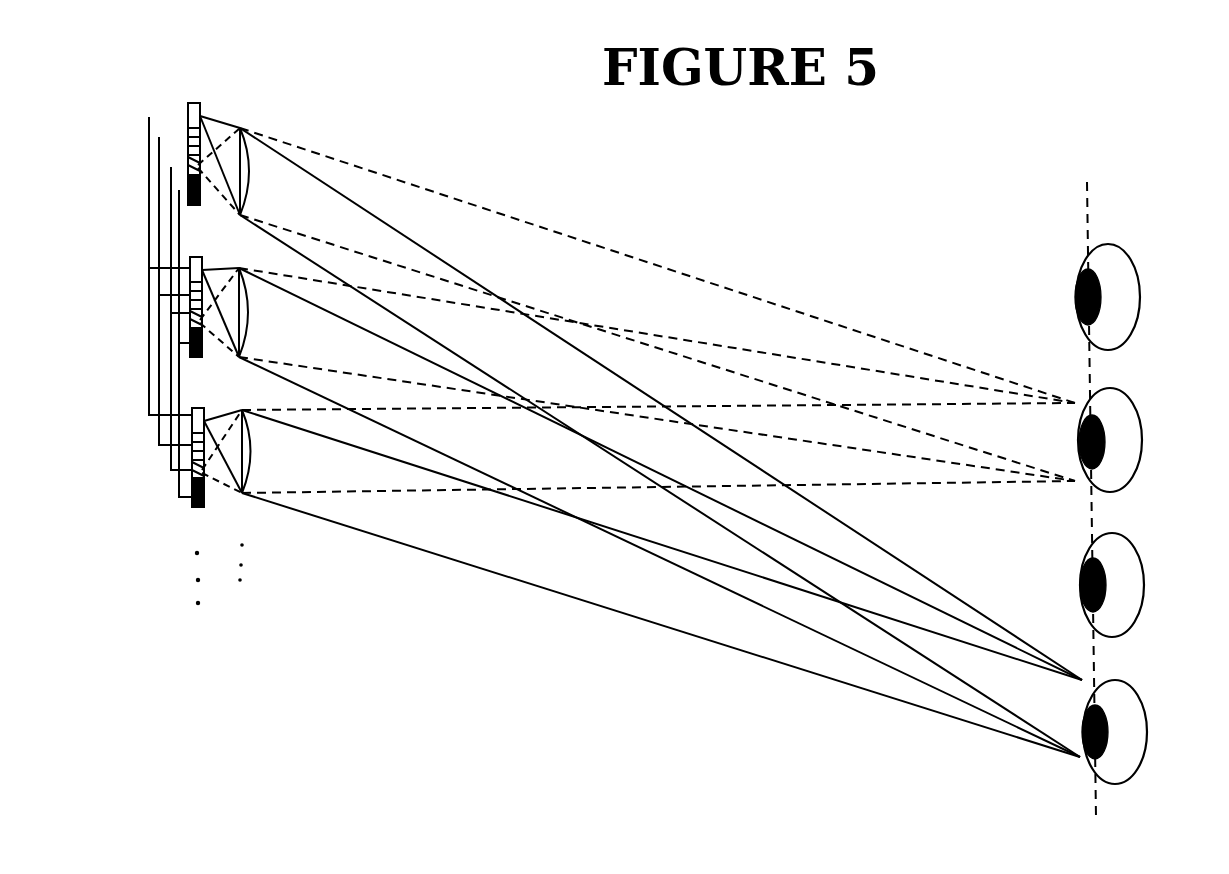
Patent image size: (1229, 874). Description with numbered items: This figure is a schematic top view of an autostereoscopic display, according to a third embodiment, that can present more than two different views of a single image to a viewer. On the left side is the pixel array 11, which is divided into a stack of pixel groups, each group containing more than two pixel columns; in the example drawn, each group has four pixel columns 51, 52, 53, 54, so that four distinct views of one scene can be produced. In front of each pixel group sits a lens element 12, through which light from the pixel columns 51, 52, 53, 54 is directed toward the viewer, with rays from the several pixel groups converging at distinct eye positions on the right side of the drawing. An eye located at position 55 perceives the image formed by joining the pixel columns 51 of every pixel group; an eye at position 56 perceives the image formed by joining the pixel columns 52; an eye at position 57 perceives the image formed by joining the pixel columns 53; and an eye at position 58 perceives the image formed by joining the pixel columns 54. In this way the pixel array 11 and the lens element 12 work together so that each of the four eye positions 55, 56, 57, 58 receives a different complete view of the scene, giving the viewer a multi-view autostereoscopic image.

The pixel array 11 is at (201, 78).
The lens 12 is at (244, 115).
The pixel column 51 is at (188, 116).
The pixel column 52 is at (188, 137).
The pixel column 53 is at (188, 165).
The pixel column 54 is at (188, 190).
The position 55 is at (1146, 707).
The position 56 is at (1143, 555).
The position 57 is at (1141, 412).
The position 58 is at (1139, 272).